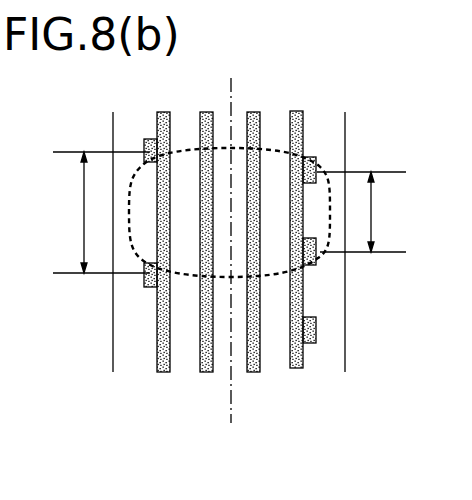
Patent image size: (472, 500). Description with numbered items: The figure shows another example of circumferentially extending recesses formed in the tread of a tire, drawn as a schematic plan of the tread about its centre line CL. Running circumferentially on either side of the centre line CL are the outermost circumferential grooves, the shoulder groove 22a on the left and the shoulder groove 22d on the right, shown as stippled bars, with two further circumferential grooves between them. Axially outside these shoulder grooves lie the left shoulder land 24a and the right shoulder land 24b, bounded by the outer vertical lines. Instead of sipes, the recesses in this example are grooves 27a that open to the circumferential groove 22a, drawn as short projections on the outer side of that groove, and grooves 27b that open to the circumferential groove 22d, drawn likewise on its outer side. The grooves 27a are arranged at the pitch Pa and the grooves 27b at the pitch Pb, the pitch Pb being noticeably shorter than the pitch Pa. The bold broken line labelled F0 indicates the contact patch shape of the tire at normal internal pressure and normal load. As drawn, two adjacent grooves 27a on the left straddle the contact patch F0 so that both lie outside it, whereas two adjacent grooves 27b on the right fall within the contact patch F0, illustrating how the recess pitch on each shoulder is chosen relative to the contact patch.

The circumferential groove 22a is at (166, 372).
The circumferential groove 22d is at (298, 368).
The shoulder land 24a is at (128, 345).
The shoulder land 24b is at (333, 363).
The groove 27a is at (153, 142).
The groove 27b is at (317, 166).
The contact patch region F0 is at (280, 152).
The pitch Pa is at (101, 212).
The pitch Pb is at (363, 212).
The centre line CL is at (233, 236).